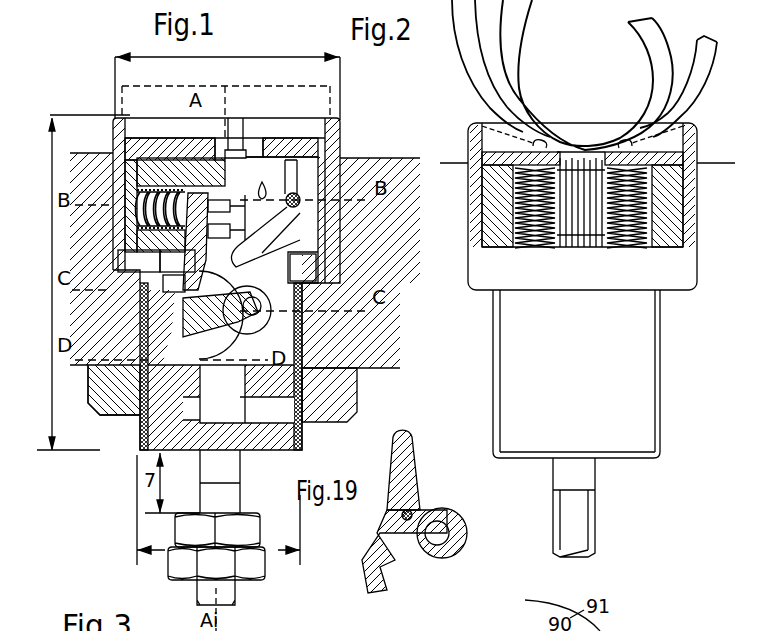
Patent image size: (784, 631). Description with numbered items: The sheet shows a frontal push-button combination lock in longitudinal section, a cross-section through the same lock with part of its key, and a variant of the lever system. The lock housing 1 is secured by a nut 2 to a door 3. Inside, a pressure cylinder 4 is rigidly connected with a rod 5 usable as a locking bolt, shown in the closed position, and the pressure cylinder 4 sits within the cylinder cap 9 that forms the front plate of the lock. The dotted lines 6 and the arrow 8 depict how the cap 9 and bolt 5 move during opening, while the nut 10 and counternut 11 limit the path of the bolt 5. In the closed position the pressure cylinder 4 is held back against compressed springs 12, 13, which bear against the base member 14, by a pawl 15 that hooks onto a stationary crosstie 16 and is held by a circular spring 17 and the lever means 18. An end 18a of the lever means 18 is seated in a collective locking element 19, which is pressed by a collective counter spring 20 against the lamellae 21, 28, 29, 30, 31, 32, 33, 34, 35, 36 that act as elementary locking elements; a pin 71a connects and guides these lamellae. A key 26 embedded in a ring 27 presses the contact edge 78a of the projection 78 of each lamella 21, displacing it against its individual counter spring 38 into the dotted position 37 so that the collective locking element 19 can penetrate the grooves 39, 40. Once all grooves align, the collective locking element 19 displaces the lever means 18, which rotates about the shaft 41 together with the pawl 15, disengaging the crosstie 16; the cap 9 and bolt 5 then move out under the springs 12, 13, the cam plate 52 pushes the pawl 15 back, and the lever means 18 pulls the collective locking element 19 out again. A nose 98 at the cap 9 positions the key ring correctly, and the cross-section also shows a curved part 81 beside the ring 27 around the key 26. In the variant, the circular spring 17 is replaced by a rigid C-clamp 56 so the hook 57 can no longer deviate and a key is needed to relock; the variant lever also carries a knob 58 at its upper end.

In FIG. 1, the lock housing 1 is at (335, 148).
In FIG. 2, the lock housing 1 is at (688, 141).
In FIG. 1, the nut 2 is at (343, 403).
In FIG. 1, the door 3 is at (356, 345).
In FIG. 1, the pressure cylinder 4 is at (118, 150).
In FIG. 2, the pressure cylinder 4 is at (690, 193).
In FIG. 1, the rod 5 is at (220, 481).
In FIG. 2, the rod 5 is at (574, 507).
In FIG. 1, the dotted lines 6 is at (170, 87).
In FIG. 1, the arrow 8 is at (283, 133).
In FIG. 1, the cylinder cap 9 is at (113, 125).
In FIG. 2, the cylinder cap 9 is at (478, 155).
In FIG. 1, the nut 10 is at (217, 530).
In FIG. 1, the counternut 11 is at (216, 563).
In FIG. 2, the compressed spring 12 is at (480, 211).
In FIG. 2, the compressed spring 13 is at (688, 219).
In FIG. 1, the base member 14 is at (137, 446).
In FIG. 1, the pawl 15 is at (95, 382).
In FIG. 1, the crosstie 16 is at (138, 416).
In FIG. 1, the circular spring 17 is at (212, 360).
In FIG. 1, the lever means 18 is at (204, 266).
In FIG. 1, the end of lever means 18a is at (125, 192).
In FIG. 1, the collective locking element 19 is at (163, 138).
In FIG. 1, the compressed spring 20 is at (171, 261).
In FIG. 1, the lamella 21 is at (236, 208).
In FIG. 2, the lamella 21 is at (580, 250).
In FIG. 2, the key 26 is at (548, 143).
In FIG. 2, the ring 27 is at (690, 97).
In FIG. 2, the lamella 28 is at (500, 248).
In FIG. 2, the lamella 29 is at (516, 248).
In FIG. 2, the lamella 30 is at (540, 248).
In FIG. 2, the lamella 31 is at (558, 248).
In FIG. 2, the lamella 32 is at (572, 250).
In FIG. 2, the lamella 33 is at (590, 248).
In FIG. 2, the lamella 34 is at (601, 248).
In FIG. 2, the lamella 35 is at (613, 248).
In FIG. 2, the lamella 36 is at (640, 248).
In FIG. 1, the dotted line position 37 is at (272, 243).
In FIG. 1, the individual counter spring 38 is at (327, 282).
In FIG. 1, the groove 39 is at (249, 184).
In FIG. 1, the groove 40 is at (303, 266).
In FIG. 1, the shaft 41 is at (173, 283).
In FIG. 1, the cam plate 52 is at (139, 261).
In FIG. 19, the rigid C-clamp 56 is at (447, 510).
In FIG. 19, the hook 57 is at (372, 573).
In FIG. 19, the lever knob 58 is at (412, 438).
In FIG. 1, the pin 71a is at (342, 227).
In FIG. 1, the projection 78 is at (243, 120).
In FIG. 1, the contact edge 78a is at (232, 137).
In FIG. 2, the clamp ring 81 is at (662, 58).
In FIG. 1, the nose 98 is at (203, 137).